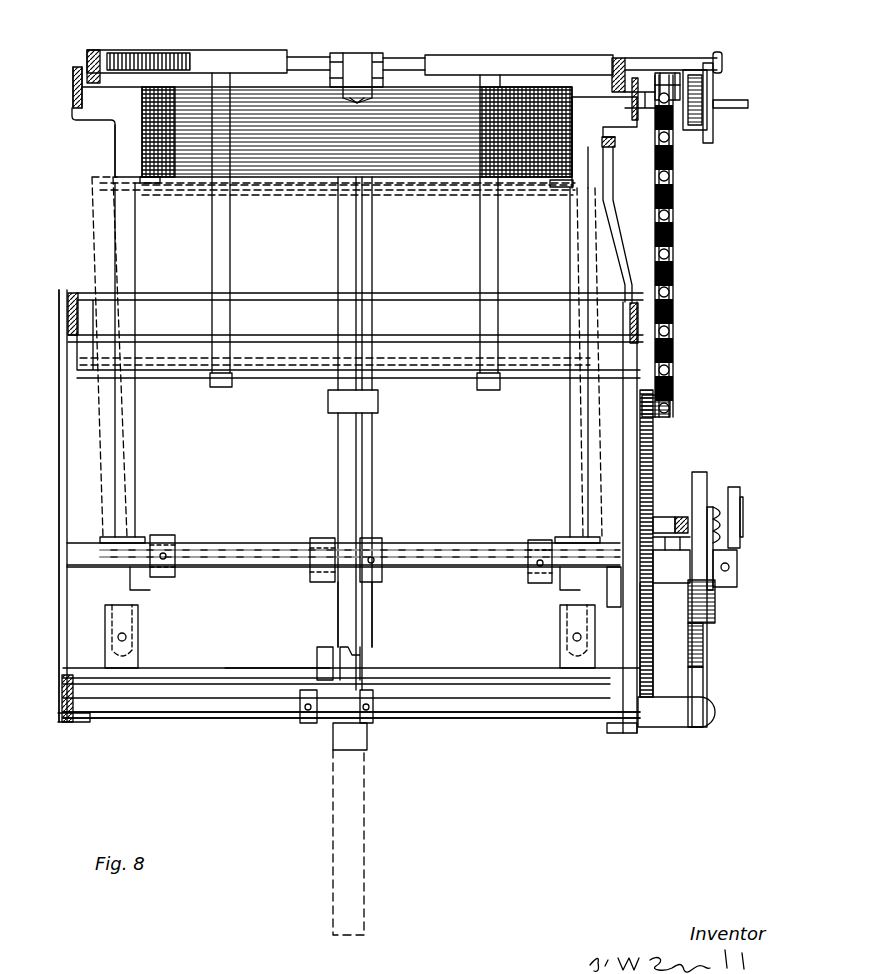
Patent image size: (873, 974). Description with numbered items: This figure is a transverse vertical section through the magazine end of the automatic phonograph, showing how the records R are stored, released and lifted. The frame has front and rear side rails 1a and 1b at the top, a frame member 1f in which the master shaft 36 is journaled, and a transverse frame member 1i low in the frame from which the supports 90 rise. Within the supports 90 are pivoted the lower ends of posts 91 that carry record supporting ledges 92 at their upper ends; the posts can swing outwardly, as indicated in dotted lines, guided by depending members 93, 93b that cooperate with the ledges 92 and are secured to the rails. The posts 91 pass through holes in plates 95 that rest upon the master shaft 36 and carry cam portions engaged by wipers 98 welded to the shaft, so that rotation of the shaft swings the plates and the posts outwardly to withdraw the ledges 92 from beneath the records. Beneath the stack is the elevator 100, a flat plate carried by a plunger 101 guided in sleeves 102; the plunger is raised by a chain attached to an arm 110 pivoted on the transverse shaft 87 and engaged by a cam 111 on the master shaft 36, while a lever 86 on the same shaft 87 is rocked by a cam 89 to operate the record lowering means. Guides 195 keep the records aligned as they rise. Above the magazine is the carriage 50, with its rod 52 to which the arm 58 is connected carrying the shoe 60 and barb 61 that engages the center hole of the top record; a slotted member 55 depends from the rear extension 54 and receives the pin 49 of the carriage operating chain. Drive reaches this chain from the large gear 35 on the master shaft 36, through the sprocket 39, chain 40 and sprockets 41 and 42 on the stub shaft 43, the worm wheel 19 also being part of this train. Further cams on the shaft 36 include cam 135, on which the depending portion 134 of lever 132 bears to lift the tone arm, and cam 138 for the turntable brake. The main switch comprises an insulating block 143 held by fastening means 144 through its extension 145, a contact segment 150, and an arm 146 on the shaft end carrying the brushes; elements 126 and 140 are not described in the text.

The record R is at (179, 92).
The front side rail 1a is at (73, 88).
The rear side rail 1b is at (632, 105).
The frame member 1f is at (59, 508).
The frame member 1i is at (228, 668).
The worm wheel 19 is at (637, 634).
The large gear 35 is at (653, 478).
The master shaft 36 is at (450, 544).
The sprocket 39 is at (672, 412).
The chain 40 is at (674, 247).
The sprocket 41 is at (667, 73).
The sprocket 42 is at (695, 72).
The stub shaft 43 is at (645, 110).
The pin 49 is at (742, 100).
The carriage 50 is at (548, 56).
The rod 52 is at (306, 56).
The rear extension 54 is at (637, 58).
The slotted member 55 is at (713, 130).
The arm 58 is at (356, 52).
The shoe 60 is at (368, 72).
The barb 61 is at (372, 100).
The lever 86 is at (317, 660).
The transverse shaft 87 is at (497, 720).
The cam 89 is at (323, 540).
The support 90 is at (575, 640).
The post 91 is at (575, 462).
The record supporting ledge 92 is at (158, 185).
The depending member 93 is at (115, 148).
The depending member 93b is at (590, 172).
The plate 95 is at (548, 540).
The wiper 98 is at (562, 588).
The elevator 100 is at (392, 363).
The plunger 101 is at (365, 822).
The sleeve 102 is at (378, 400).
The arm 110 is at (362, 662).
The cam 111 is at (362, 602).
The head 126 is at (722, 60).
The lever 132 is at (682, 517).
The depending portion 134 is at (672, 560).
The cam 135 is at (654, 583).
The cam 138 is at (612, 583).
The plate 140 is at (713, 465).
The block 143 is at (705, 640).
The fastening means 144 is at (716, 716).
The extension 145 is at (703, 682).
The arm 146 is at (740, 490).
The contact segment 150 is at (716, 601).
The guide 195 is at (480, 270).